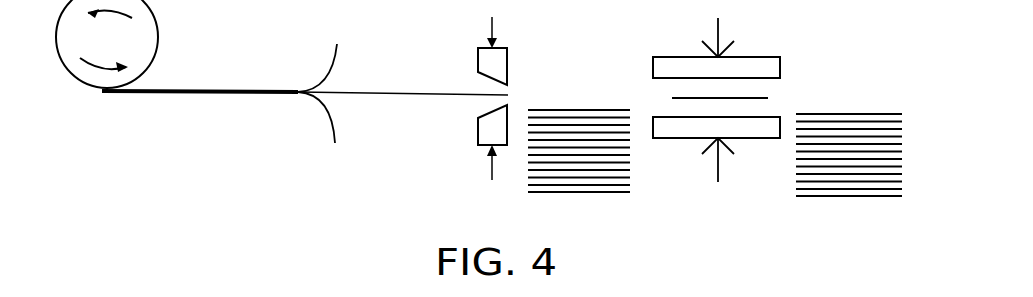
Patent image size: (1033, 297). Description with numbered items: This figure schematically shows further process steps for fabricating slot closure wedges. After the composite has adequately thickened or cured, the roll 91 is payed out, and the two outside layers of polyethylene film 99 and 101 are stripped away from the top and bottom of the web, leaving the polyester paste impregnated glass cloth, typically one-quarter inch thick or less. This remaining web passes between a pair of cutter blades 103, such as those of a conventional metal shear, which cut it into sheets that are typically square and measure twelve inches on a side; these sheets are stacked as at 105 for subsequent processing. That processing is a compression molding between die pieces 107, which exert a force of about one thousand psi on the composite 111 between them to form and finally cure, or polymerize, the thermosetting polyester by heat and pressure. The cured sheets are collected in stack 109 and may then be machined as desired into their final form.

The roll 91 is at (145, 30).
The outside layer of polyethylene film 99 is at (337, 46).
The outside layer of polyethylene film 101 is at (330, 132).
The cutter blades 103 is at (508, 70).
The stack 105 is at (523, 178).
The die pieces 107 is at (773, 66).
The stack of cured sheets 109 is at (905, 185).
The pressed sheet 111 is at (762, 96).